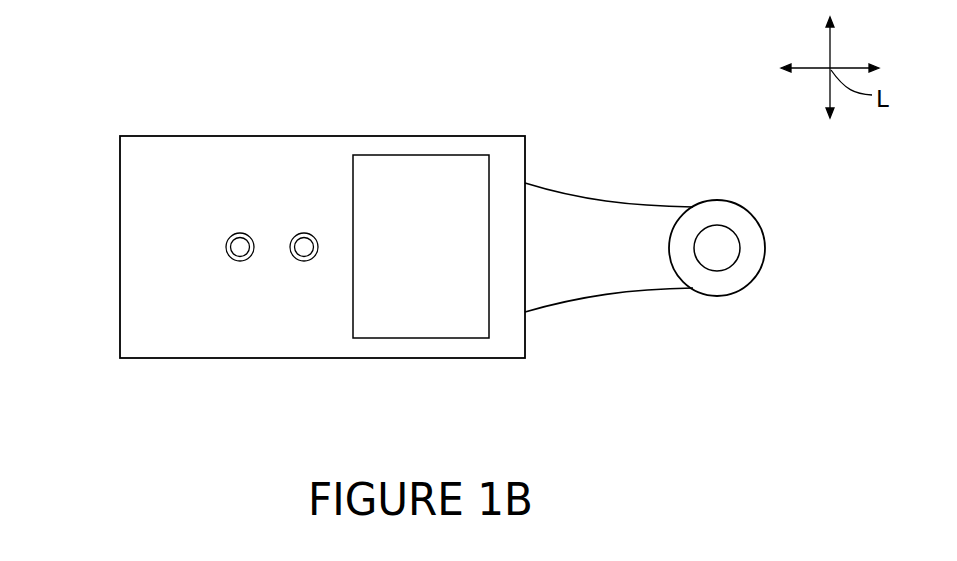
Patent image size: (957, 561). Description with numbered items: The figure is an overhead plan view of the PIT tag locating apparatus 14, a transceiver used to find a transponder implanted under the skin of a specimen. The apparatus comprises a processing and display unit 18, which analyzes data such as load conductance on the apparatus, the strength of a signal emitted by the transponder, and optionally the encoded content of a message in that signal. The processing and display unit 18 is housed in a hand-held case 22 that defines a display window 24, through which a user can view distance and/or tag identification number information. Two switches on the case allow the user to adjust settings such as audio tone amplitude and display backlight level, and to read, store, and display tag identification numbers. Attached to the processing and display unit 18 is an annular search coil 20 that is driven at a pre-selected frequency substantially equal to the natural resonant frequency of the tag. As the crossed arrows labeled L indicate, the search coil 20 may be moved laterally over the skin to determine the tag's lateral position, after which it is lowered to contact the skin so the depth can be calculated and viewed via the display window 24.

The PIT tag locating apparatus 14 is at (72, 171).
The processing and display unit 18 is at (418, 378).
The search coil 20 is at (755, 276).
The hand-held case 22 is at (197, 206).
The display window 24 is at (435, 298).